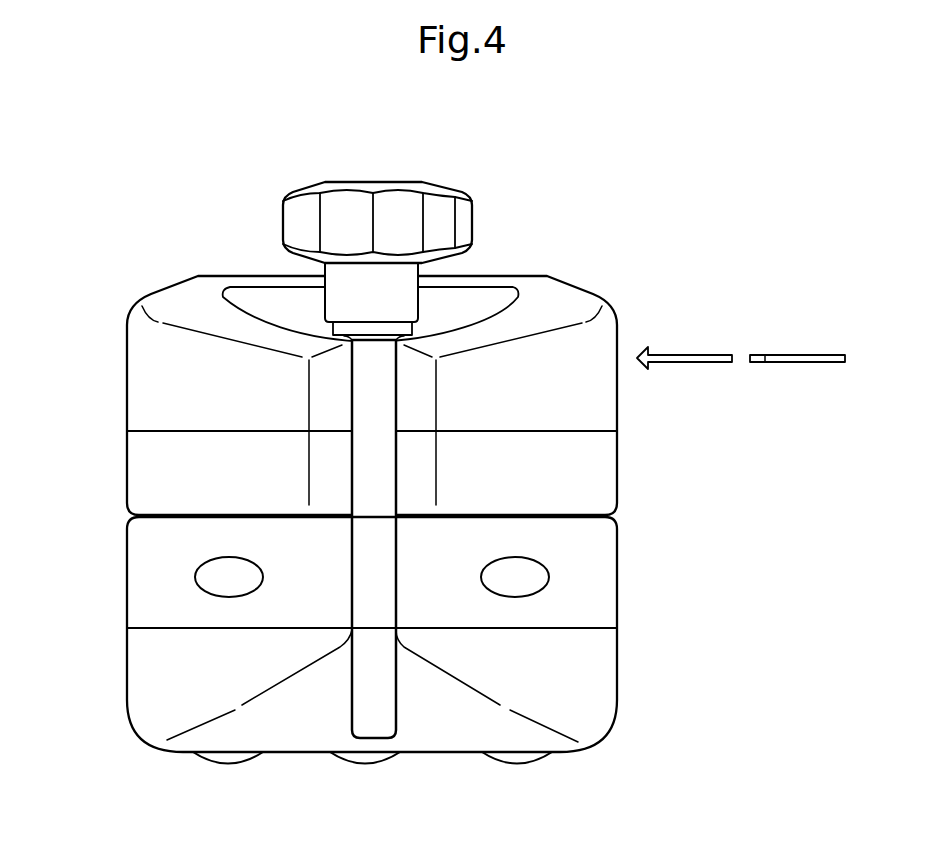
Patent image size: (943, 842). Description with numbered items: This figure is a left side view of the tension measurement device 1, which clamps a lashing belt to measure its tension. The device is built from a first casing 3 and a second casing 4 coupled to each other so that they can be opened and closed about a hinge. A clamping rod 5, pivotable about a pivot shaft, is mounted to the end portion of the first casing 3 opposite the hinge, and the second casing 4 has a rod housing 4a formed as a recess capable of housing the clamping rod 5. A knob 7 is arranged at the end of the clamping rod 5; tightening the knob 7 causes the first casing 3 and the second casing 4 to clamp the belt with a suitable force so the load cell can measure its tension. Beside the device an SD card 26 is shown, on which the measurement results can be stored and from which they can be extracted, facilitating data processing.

The tension measurement device 1 is at (148, 230).
The first casing 3 is at (596, 588).
The second casing 4 is at (505, 274).
The rod housing 4a is at (382, 474).
The clamping rod 5 is at (365, 397).
The knob 7 is at (370, 182).
The SD card 26 is at (797, 355).